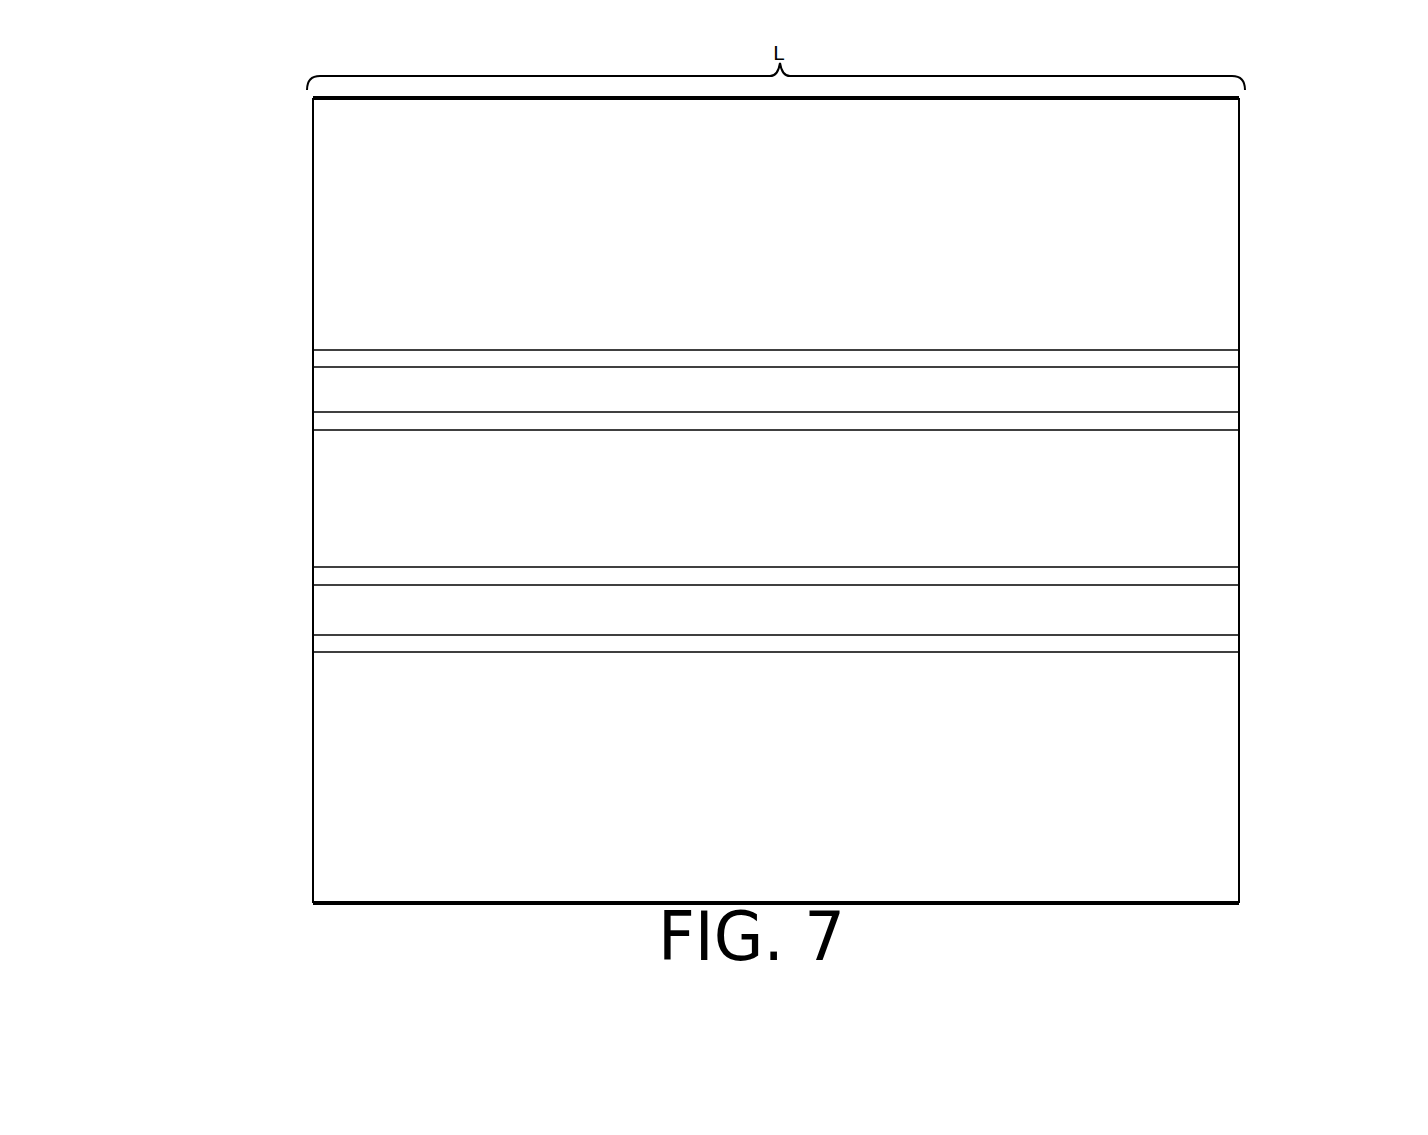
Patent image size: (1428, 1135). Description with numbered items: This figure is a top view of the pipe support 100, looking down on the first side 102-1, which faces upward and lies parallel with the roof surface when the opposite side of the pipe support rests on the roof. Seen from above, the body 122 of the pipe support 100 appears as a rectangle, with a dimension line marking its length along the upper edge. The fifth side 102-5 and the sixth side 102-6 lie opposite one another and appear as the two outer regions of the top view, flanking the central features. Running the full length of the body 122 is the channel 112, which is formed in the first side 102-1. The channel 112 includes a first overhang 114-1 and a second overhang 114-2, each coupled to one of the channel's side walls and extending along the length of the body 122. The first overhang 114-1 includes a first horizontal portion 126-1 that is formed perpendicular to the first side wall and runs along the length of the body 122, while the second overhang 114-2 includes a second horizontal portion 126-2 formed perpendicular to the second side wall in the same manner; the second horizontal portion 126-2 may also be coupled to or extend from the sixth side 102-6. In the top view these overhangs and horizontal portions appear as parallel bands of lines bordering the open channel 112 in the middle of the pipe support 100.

The pipe support 100 is at (1345, 82).
The first side 102-1 is at (378, 150).
The fifth side 102-5 is at (1163, 757).
The sixth side 102-6 is at (322, 398).
The channel 112 is at (378, 508).
The first overhang 114-1 is at (413, 420).
The second overhang 114-2 is at (412, 577).
The body 122 is at (1291, 538).
The first horizontal portion 126-1 is at (1217, 396).
The second horizontal portion 126-2 is at (1217, 604).